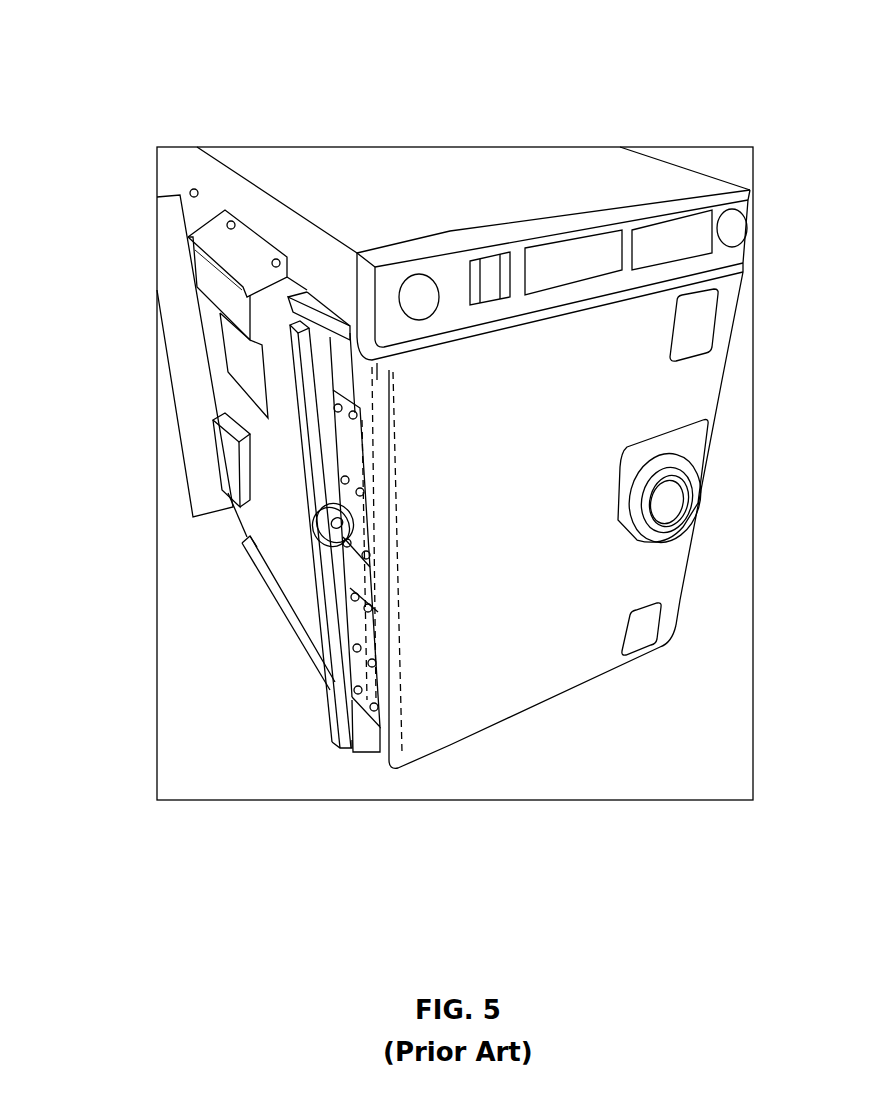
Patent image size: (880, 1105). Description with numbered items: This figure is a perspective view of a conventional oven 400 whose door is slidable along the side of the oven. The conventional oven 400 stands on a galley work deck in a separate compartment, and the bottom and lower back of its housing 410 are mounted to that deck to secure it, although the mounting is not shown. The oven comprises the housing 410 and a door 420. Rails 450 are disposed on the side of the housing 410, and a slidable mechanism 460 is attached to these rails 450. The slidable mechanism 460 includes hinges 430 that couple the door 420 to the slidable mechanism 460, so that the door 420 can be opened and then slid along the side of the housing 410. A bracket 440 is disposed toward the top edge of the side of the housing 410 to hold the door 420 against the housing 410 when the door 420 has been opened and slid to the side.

The conventional oven 400 is at (162, 127).
The housing 410 is at (468, 172).
The door 420 is at (520, 491).
The hinges 430 is at (357, 460).
The bracket 440 is at (203, 268).
The rails 450 is at (283, 620).
The slidable mechanism 460 is at (320, 318).